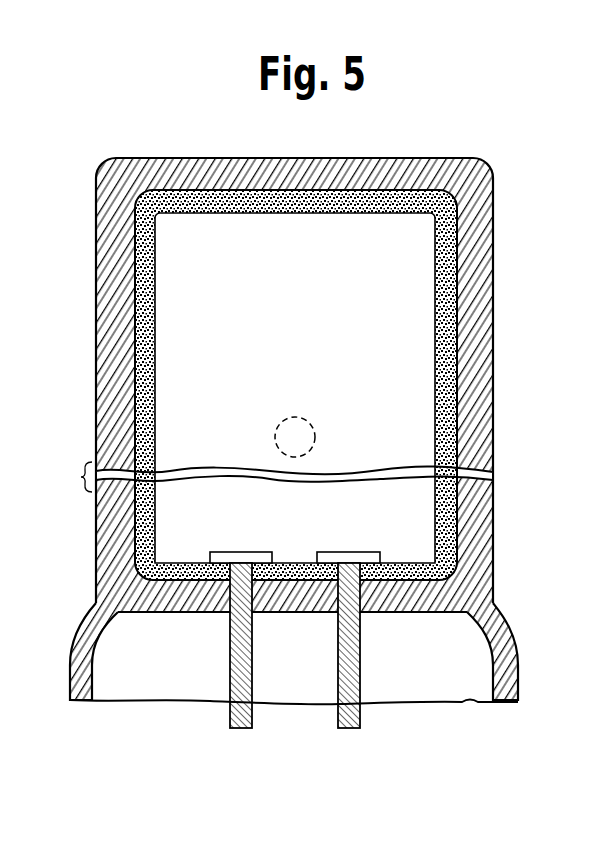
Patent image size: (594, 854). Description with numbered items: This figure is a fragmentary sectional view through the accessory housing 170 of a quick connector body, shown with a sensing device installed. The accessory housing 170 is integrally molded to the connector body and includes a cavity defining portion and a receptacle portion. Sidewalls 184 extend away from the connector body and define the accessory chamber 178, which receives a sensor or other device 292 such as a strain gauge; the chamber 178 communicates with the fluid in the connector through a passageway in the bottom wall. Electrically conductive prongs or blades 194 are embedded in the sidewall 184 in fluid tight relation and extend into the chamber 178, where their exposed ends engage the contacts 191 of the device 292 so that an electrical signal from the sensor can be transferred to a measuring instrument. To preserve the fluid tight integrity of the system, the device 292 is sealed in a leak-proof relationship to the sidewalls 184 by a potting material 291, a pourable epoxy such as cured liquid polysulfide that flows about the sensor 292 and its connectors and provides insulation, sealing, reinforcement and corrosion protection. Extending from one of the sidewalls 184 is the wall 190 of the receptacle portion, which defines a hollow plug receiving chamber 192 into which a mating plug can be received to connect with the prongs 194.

The accessory housing 170 is at (90, 217).
The sidewalls 184 is at (356, 163).
The wall 190 is at (73, 642).
The accessory chamber 178 is at (137, 383).
The potting material 291 is at (135, 438).
The sensor or other device 292 is at (313, 338).
The contacts 191 is at (247, 552).
The electrically conductive prongs or blades 194 is at (253, 718).
The plug receiving chamber 192 is at (154, 684).